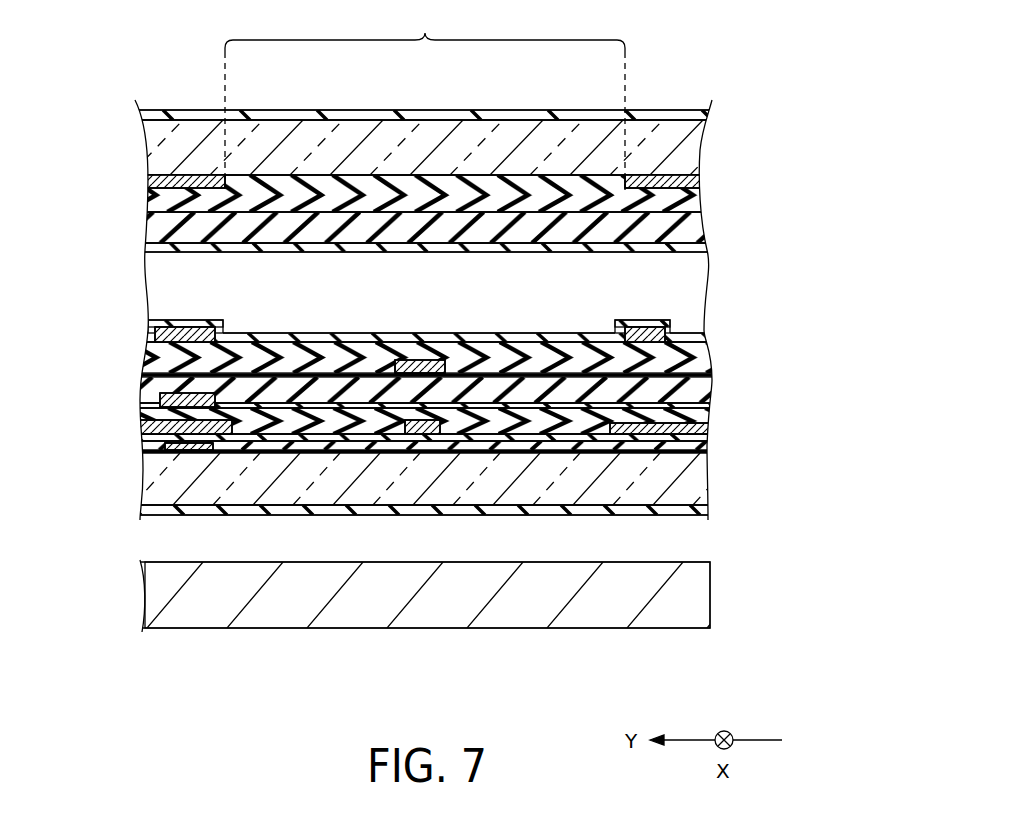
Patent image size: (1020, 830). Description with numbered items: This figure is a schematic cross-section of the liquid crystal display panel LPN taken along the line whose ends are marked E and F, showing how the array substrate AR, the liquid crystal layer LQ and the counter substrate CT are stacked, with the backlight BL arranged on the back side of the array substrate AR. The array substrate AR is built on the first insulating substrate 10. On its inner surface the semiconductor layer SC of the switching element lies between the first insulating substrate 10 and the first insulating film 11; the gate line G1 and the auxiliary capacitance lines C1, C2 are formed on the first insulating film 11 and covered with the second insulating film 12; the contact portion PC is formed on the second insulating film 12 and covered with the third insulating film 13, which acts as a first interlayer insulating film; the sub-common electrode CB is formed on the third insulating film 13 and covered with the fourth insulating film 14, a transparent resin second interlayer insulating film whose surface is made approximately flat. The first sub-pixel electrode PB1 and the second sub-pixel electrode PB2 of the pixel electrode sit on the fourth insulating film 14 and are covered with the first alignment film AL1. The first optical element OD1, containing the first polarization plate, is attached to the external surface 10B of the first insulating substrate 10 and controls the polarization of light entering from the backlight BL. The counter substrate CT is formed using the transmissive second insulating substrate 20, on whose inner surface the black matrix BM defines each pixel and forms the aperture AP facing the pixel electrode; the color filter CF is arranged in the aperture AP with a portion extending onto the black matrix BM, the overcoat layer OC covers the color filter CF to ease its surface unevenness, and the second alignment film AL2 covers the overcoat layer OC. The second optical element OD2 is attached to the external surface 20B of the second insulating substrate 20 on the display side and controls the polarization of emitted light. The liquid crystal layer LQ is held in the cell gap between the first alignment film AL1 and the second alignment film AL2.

The aperture AP is at (425, 97).
The external surface 20B is at (196, 111).
The liquid crystal display panel LPN is at (727, 82).
The second optical element OD2 is at (707, 113).
The second insulating substrate 20 is at (698, 146).
The black matrix BM is at (698, 177).
The color filter CF is at (693, 201).
The overcoat layer OC is at (695, 223).
The second alignment film AL2 is at (694, 250).
The counter substrate CT is at (138, 146).
The first sub-pixel electrode PB1 is at (172, 326).
The second sub-pixel electrode PB2 is at (630, 327).
The liquid crystal layer LQ is at (695, 302).
The first alignment film AL1 is at (690, 331).
The fourth insulating film 14 is at (697, 355).
The third insulating film 13 is at (703, 387).
The second insulating film 12 is at (705, 413).
The auxiliary capacitance line C1 is at (140, 427).
The auxiliary capacitance line C2 is at (704, 432).
The array substrate AR is at (130, 463).
The first insulating film 11 is at (706, 446).
The first insulating substrate 10 is at (698, 485).
The line E-F end point E is at (128, 510).
The line E-F end point F is at (720, 510).
The external surface 10B is at (160, 515).
The first optical element OD1 is at (672, 516).
The contact portion PC is at (201, 408).
The semiconductor layer SC is at (208, 451).
The gate line G1 is at (433, 374).
The sub-common electrode CB is at (430, 434).
The backlight BL is at (710, 598).